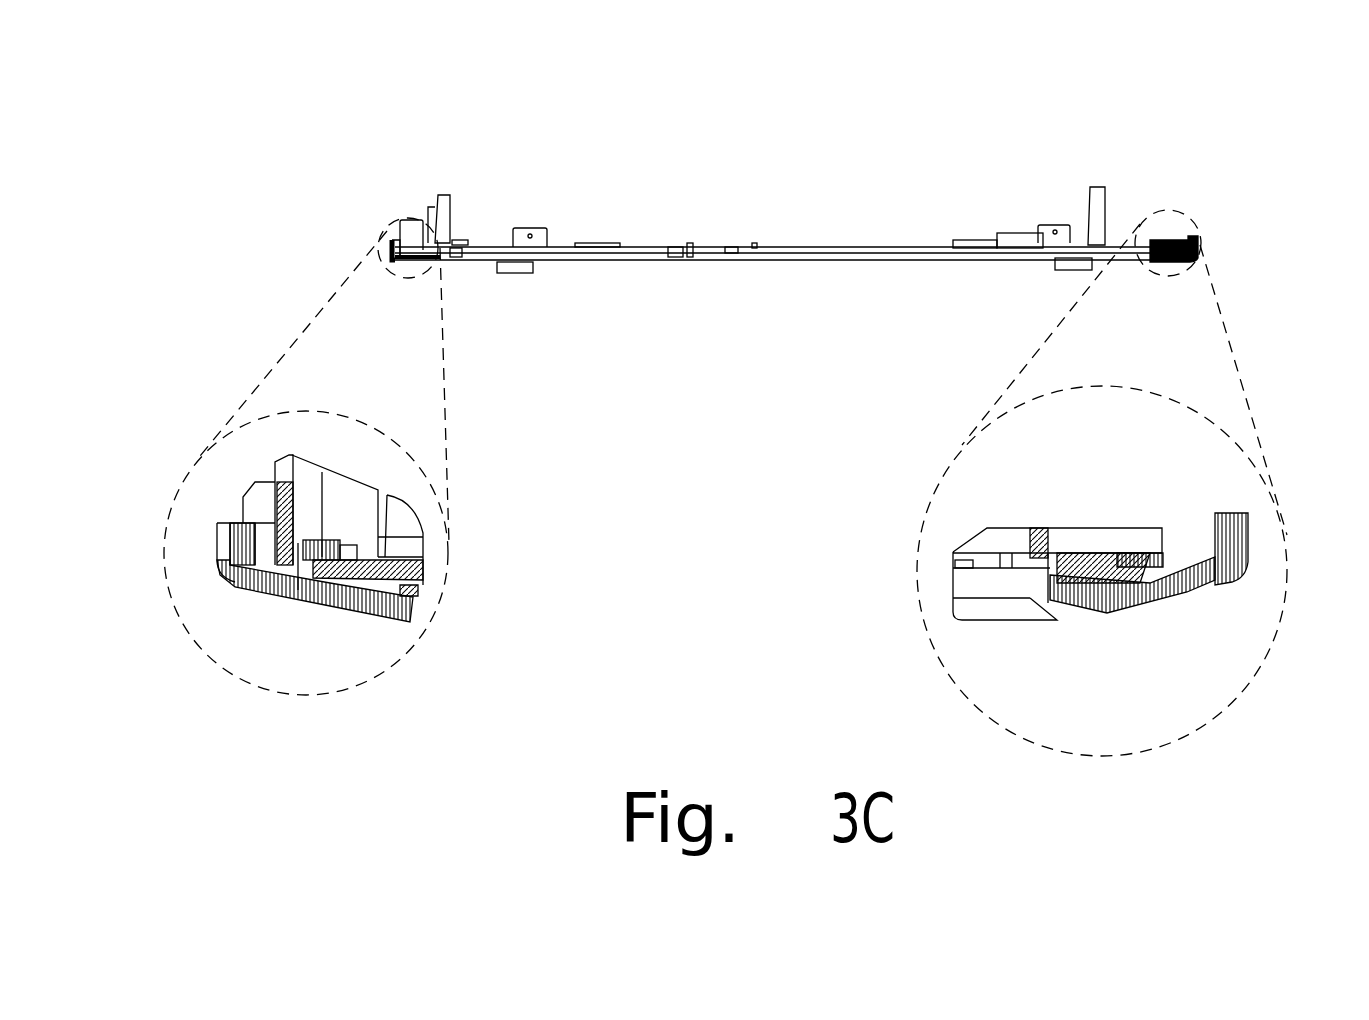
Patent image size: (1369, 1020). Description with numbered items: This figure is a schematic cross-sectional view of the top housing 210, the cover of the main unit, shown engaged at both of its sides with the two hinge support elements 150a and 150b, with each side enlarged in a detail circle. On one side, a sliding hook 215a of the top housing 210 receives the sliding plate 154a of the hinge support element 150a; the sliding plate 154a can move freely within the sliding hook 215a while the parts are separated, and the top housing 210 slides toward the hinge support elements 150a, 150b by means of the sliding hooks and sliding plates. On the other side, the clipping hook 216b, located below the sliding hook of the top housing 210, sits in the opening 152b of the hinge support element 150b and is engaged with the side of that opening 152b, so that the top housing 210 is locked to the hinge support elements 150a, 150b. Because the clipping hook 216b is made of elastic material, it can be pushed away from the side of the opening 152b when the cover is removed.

The hinge support element 150a is at (1102, 188).
The hinge support element 150b is at (437, 207).
The opening 152b is at (300, 545).
The sliding plate 154a is at (1030, 528).
The top housing 210 is at (833, 247).
The sliding hook 215a is at (1178, 598).
The clipping hook 216b is at (267, 592).